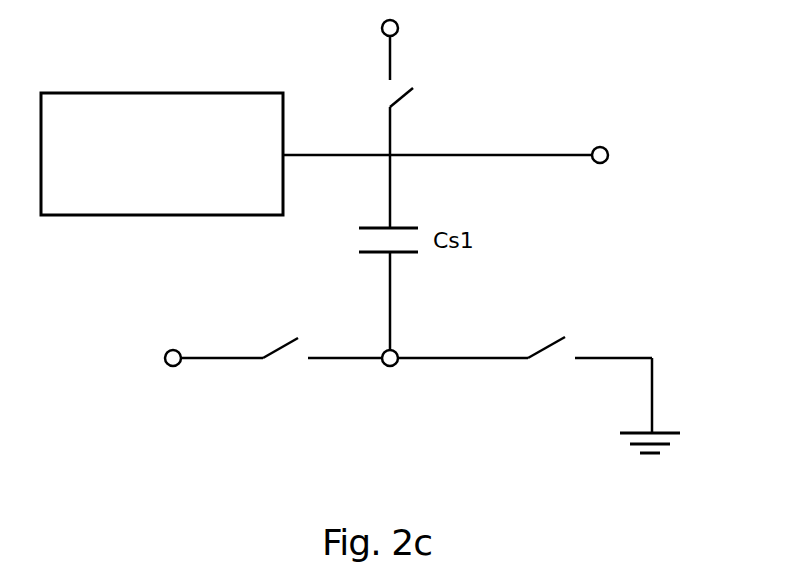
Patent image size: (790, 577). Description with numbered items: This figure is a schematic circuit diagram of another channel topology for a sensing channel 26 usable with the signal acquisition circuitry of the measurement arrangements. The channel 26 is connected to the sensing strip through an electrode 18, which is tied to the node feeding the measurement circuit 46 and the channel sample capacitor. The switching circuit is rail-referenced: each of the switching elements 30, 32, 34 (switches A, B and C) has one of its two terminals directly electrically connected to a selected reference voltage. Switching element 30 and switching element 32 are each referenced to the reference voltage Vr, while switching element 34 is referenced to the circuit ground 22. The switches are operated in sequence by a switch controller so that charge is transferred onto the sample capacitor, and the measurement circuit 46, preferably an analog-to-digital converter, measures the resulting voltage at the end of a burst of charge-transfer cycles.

The measurement circuit 46 is at (160, 92).
The switching element 30 is at (408, 96).
The electrode 18 is at (606, 148).
The switching element 32 is at (296, 336).
The switching element 34 is at (563, 338).
The circuit ground 22 is at (658, 455).
The channel 26 is at (188, 418).